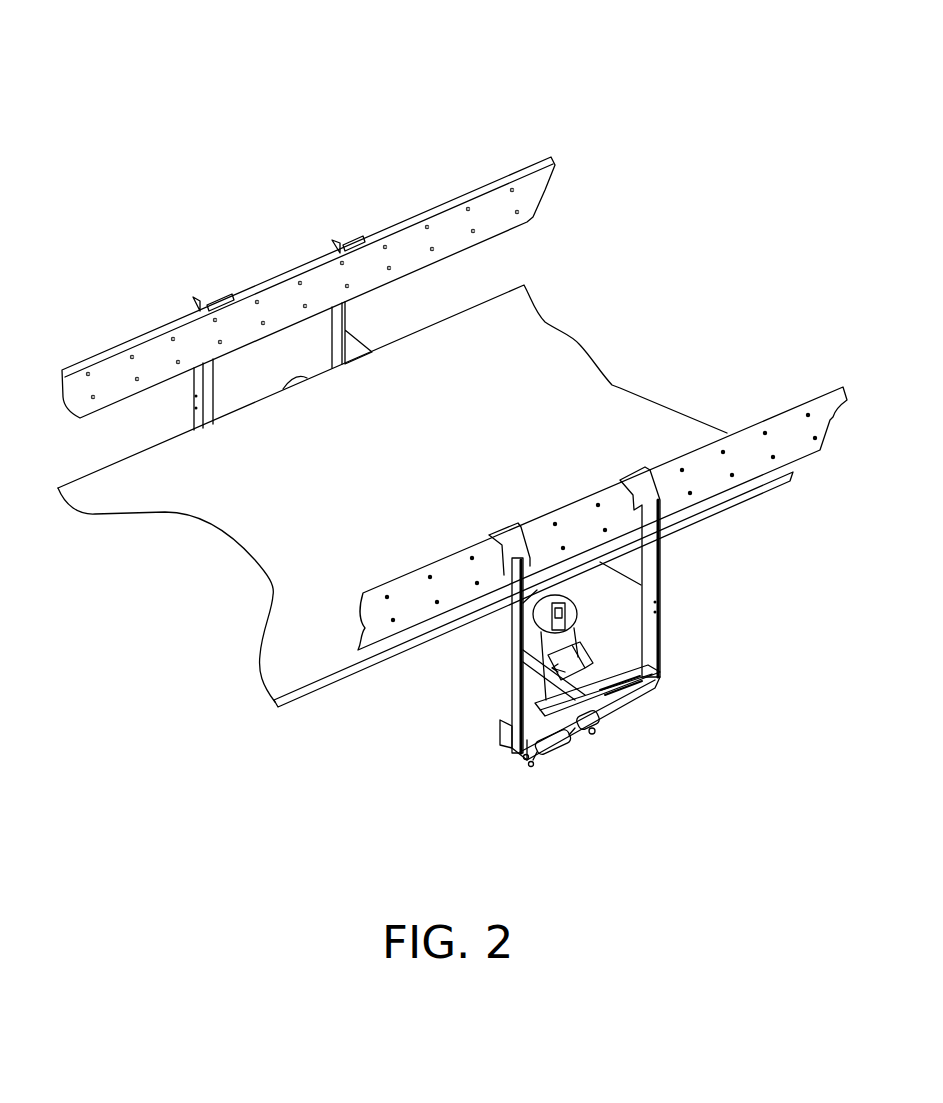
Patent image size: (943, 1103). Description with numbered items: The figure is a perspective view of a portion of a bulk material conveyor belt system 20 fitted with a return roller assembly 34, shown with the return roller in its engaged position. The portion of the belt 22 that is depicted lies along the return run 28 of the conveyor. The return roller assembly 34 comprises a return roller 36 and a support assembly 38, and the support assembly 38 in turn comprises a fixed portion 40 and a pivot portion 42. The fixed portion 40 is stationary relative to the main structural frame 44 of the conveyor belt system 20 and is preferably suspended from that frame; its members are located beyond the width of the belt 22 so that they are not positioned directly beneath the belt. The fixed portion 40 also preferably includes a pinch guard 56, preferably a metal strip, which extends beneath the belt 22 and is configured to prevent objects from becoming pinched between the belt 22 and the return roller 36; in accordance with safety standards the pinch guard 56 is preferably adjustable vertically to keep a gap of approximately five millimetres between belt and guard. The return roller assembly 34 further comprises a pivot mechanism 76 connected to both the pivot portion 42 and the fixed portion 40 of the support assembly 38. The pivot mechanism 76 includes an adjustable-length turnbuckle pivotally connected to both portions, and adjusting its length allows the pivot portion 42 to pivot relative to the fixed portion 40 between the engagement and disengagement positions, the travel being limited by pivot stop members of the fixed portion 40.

The bulk material conveyor belt system 20 is at (406, 76).
The belt 22 is at (532, 332).
The return run 28 is at (613, 395).
The return roller assembly 34 is at (500, 722).
The return roller 36 is at (567, 598).
The support assembly 38 is at (515, 673).
The fixed portion 40 is at (597, 693).
The pivot portion 42 is at (542, 750).
The main structural frame 44 is at (453, 218).
The pinch guard 56 is at (637, 583).
The pivot mechanism 76 is at (570, 742).